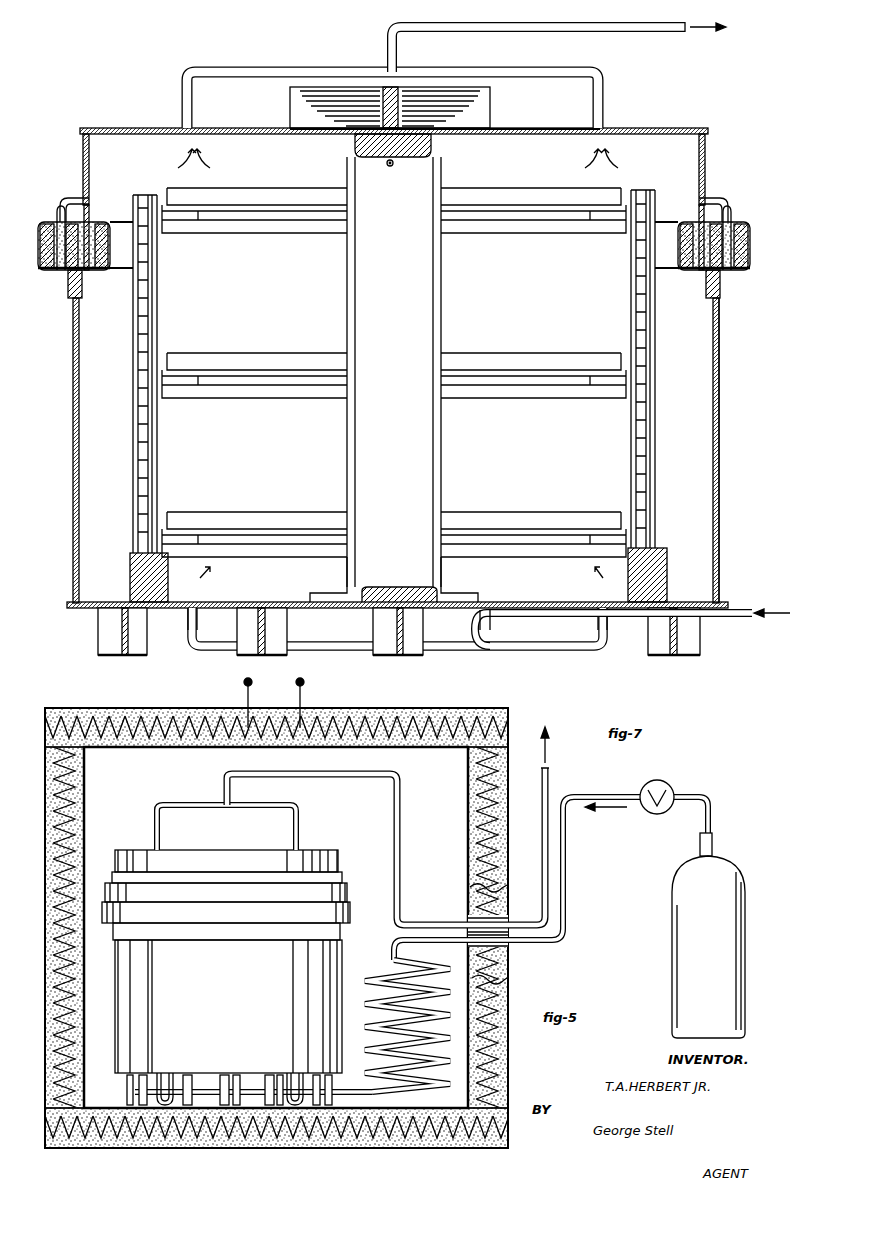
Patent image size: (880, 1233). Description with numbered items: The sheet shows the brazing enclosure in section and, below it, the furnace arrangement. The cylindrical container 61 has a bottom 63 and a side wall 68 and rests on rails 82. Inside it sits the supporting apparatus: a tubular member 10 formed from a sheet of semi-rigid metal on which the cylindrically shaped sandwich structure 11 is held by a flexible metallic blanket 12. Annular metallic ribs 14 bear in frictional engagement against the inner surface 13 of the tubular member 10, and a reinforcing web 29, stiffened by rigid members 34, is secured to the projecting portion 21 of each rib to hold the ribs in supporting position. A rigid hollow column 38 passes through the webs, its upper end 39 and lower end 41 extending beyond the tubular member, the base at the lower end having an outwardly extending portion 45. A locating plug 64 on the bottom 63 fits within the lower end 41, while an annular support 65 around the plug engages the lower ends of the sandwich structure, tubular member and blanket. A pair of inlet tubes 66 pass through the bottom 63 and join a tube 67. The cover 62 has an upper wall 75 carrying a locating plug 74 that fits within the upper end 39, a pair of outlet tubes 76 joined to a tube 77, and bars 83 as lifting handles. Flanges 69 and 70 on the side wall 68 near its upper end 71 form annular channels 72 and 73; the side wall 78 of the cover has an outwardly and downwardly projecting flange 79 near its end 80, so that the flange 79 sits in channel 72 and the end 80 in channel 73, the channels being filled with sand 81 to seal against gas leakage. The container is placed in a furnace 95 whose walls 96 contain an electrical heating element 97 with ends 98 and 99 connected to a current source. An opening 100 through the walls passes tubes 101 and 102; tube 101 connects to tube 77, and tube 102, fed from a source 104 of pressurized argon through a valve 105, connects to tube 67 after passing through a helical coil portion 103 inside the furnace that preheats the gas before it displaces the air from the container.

In FIG. 7, the tubular member 10 is at (160, 482).
In FIG. 7, the sandwich structure 11 is at (140, 198).
In FIG. 7, the flexible metallic blanket 12 is at (133, 470).
In FIG. 7, the inner surface 13 is at (160, 458).
In FIG. 7, the annular metallic ribs 14 is at (628, 192).
In FIG. 7, the projecting portion 21 is at (197, 366).
In FIG. 7, the reinforcing web 29 is at (323, 378).
In FIG. 7, the rigid members 34 is at (255, 398).
In FIG. 7, the rigid hollow column 38 is at (442, 295).
In FIG. 7, the upper end 39 is at (435, 148).
In FIG. 7, the lower end 41 is at (355, 583).
In FIG. 7, the outwardly extending portion 45 is at (472, 600).
In FIG. 7, the cylindrical container 61 is at (706, 430).
In FIG. 5, the cylindrical container 61 is at (119, 1001).
In FIG. 7, the cover 62 is at (668, 143).
In FIG. 5, the cover 62 is at (104, 888).
In FIG. 7, the bottom 63 is at (495, 606).
In FIG. 7, the locating plug 64 is at (398, 588).
In FIG. 7, the annular support 65 is at (668, 577).
In FIG. 7, the inlet tubes 66 is at (195, 648).
In FIG. 5, the inlet tubes 66 is at (166, 1080).
In FIG. 7, the tube 67 is at (727, 618).
In FIG. 5, the tube 67 is at (367, 1090).
In FIG. 7, the side wall 68 is at (722, 480).
In FIG. 7, the flange 69 is at (103, 224).
In FIG. 7, the flange 70 is at (38, 236).
In FIG. 7, the upper end 71 is at (57, 214).
In FIG. 7, the annular channel 72 is at (85, 272).
In FIG. 7, the annular channel 73 is at (62, 271).
In FIG. 7, the locating plug 74 is at (372, 157).
In FIG. 7, the upper wall 75 is at (537, 133).
In FIG. 7, the outlet tubes 76 is at (193, 107).
In FIG. 5, the outlet tubes 76 is at (162, 833).
In FIG. 7, the tube 77 is at (632, 35).
In FIG. 5, the tube 77 is at (367, 777).
In FIG. 7, the side wall 78 is at (706, 150).
In FIG. 7, the flange 79 is at (70, 200).
In FIG. 7, the end 80 is at (94, 208).
In FIG. 7, the sand 81 is at (109, 246).
In FIG. 7, the rails 82 is at (396, 630).
In FIG. 5, the rails 82 is at (134, 1093).
In FIG. 7, the bars 83 is at (302, 100).
In FIG. 5, the furnace 95 is at (445, 704).
In FIG. 5, the walls 96 is at (478, 710).
In FIG. 5, the electrical heating element 97 is at (138, 720).
In FIG. 5, the end 98 is at (244, 683).
In FIG. 5, the end 99 is at (305, 682).
In FIG. 5, the opening 100 is at (473, 923).
In FIG. 5, the tube 101 is at (551, 779).
In FIG. 5, the tube 102 is at (566, 838).
In FIG. 5, the helical coil portion 103 is at (392, 970).
In FIG. 5, the source of pressurized inert gas 104 is at (746, 905).
In FIG. 5, the valve 105 is at (669, 782).